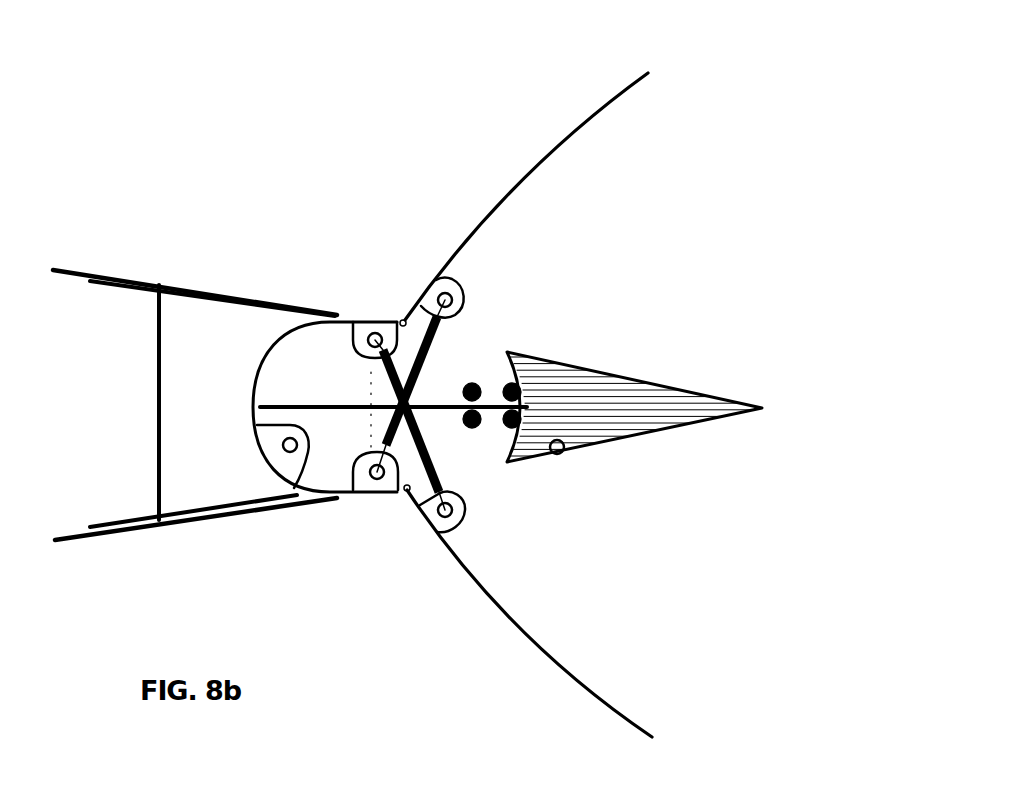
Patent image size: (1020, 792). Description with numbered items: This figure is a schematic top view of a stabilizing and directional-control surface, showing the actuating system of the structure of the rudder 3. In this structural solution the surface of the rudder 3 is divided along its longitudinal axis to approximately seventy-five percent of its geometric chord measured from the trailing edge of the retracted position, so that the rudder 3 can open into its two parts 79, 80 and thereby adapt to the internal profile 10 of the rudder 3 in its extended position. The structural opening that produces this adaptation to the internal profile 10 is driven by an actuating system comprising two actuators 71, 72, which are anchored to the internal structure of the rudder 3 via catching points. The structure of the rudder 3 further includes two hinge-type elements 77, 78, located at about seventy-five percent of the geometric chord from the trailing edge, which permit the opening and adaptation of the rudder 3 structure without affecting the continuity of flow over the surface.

The rudder 3 is at (288, 327).
The internal profile 10 is at (657, 400).
The actuator 71 is at (437, 462).
The actuator 72 is at (435, 360).
The hinge-type element 77 is at (401, 320).
The hinge-type element 78 is at (405, 493).
The rudder part 79 is at (543, 162).
The rudder part 80 is at (538, 643).